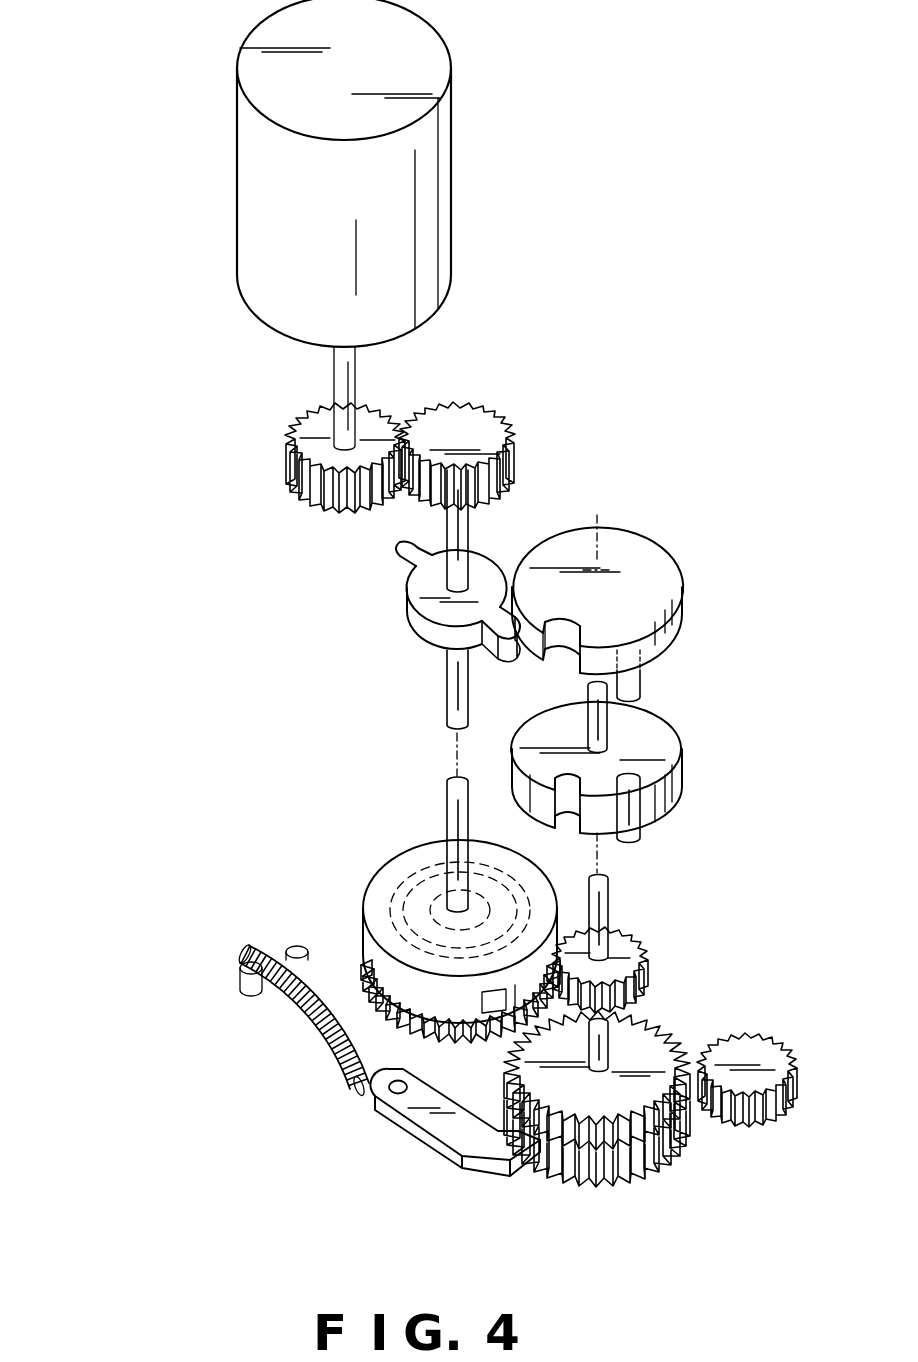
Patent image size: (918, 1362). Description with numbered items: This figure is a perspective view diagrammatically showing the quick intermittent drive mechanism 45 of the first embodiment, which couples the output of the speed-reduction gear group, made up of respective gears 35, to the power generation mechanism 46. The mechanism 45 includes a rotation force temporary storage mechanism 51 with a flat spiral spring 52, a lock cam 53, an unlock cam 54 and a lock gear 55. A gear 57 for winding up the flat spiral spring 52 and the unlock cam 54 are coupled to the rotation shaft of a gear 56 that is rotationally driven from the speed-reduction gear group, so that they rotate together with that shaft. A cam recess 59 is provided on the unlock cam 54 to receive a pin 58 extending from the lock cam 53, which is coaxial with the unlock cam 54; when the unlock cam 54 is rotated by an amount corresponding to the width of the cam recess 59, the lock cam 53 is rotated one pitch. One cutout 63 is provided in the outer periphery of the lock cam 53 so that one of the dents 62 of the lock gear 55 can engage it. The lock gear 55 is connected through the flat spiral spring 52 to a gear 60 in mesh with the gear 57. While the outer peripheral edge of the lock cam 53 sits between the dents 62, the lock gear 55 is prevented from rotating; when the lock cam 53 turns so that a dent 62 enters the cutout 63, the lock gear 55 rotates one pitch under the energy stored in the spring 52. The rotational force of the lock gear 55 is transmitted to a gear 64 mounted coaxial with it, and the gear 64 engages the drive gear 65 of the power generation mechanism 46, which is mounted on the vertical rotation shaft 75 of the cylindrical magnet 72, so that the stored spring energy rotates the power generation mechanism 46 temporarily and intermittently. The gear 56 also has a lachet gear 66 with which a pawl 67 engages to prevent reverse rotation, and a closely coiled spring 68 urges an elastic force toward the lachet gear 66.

The gear 35 is at (738, 1030).
The quick intermittent drive mechanism 45 is at (358, 770).
The power generation mechanism 46 is at (362, 173).
The rotation force temporary storage mechanism 51 is at (421, 941).
The flat spiral spring 52 is at (398, 898).
The lock cam 53 is at (641, 609).
The unlock cam 54 is at (637, 796).
The lock gear 55 is at (425, 622).
The gear 56 is at (665, 1105).
The gear 57 is at (622, 942).
The pin 58 is at (645, 690).
The cam recess 59 is at (600, 842).
The gear 60 is at (388, 1082).
The dent 62 is at (408, 556).
The cutout 63 is at (568, 650).
The gear 64 is at (505, 432).
The drive gear 65 is at (292, 488).
The lachet gear 66 is at (618, 1185).
The pawl 67 is at (468, 1143).
The closely coiled spring 68 is at (325, 1040).
The cylindrical magnet 72 is at (258, 205).
The rotation shaft 75 is at (335, 380).